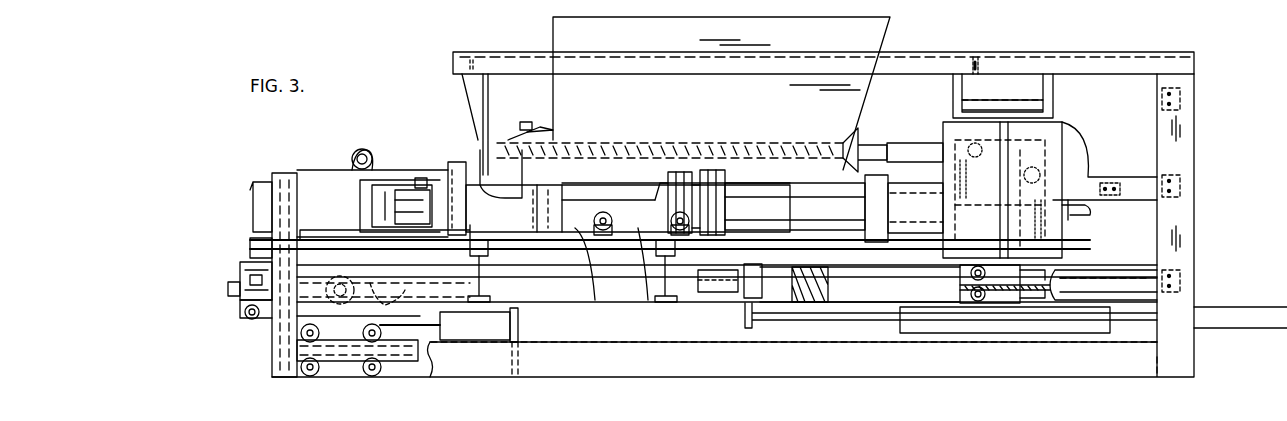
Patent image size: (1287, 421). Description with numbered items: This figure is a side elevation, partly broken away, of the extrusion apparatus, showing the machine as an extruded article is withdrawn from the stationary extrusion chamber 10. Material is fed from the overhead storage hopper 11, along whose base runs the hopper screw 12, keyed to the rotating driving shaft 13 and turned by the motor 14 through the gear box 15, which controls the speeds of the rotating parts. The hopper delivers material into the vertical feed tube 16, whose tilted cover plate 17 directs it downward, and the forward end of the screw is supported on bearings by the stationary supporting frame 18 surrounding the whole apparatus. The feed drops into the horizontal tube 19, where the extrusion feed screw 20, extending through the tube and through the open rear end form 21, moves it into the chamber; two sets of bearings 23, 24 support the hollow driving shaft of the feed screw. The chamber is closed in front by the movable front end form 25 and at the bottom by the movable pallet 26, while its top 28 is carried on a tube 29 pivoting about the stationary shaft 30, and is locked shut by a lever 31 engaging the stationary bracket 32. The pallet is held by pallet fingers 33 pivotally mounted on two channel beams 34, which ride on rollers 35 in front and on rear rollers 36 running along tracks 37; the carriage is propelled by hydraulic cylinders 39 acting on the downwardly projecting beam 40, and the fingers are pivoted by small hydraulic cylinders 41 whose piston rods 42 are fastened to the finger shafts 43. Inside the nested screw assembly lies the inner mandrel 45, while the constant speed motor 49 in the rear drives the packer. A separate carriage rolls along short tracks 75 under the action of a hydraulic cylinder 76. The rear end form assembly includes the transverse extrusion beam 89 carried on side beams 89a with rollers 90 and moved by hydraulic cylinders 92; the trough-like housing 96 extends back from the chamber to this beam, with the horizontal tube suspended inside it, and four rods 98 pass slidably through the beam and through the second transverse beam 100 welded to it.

The extrusion chamber 10 is at (358, 200).
The storage hopper 11 is at (880, 26).
The hopper screw 12 is at (600, 140).
The driving shaft 13 is at (928, 143).
The motor 14 is at (953, 118).
The gear box 15 is at (1070, 254).
The vertical feed tube 16 is at (522, 130).
The cover plate 17 is at (486, 148).
The stationary supporting frame 18 is at (462, 55).
The horizontal tube 19 is at (530, 192).
The extrusion feed screw 20 is at (466, 212).
The rear end form 21 is at (443, 246).
The bearings 23 is at (718, 170).
The bearings 24 is at (870, 175).
The front end form 25 is at (228, 290).
The pallet 26 is at (250, 250).
The top 28 is at (455, 162).
The tube 29 is at (372, 155).
The stationary shaft 30 is at (358, 150).
The lever 31 is at (405, 170).
The stationary bracket 32 is at (418, 176).
The pallet fingers 33 is at (268, 232).
The channel beams 34 is at (240, 270).
The rollers 35 is at (245, 318).
The rollers 36 is at (978, 303).
The tracks 37 is at (1060, 300).
The hydraulic cylinders 39 is at (1232, 315).
The beam 40 is at (750, 328).
The hydraulic cylinders 41 is at (725, 292).
The piston rods 42 is at (595, 300).
The shafts 43 is at (468, 288).
The mandrel 45 is at (1092, 212).
The constant speed motor 49 is at (1082, 152).
The tracks 75 is at (400, 360).
The hydraulic cylinder 76 is at (488, 340).
The rear end extrusion beam 89 is at (670, 172).
The side beams 89a is at (648, 300).
The rollers 90 is at (605, 235).
The hydraulic cylinders 92 is at (790, 200).
The trough-like housing 96 is at (572, 185).
The rods 98 is at (628, 183).
The second transverse beam 100 is at (700, 172).